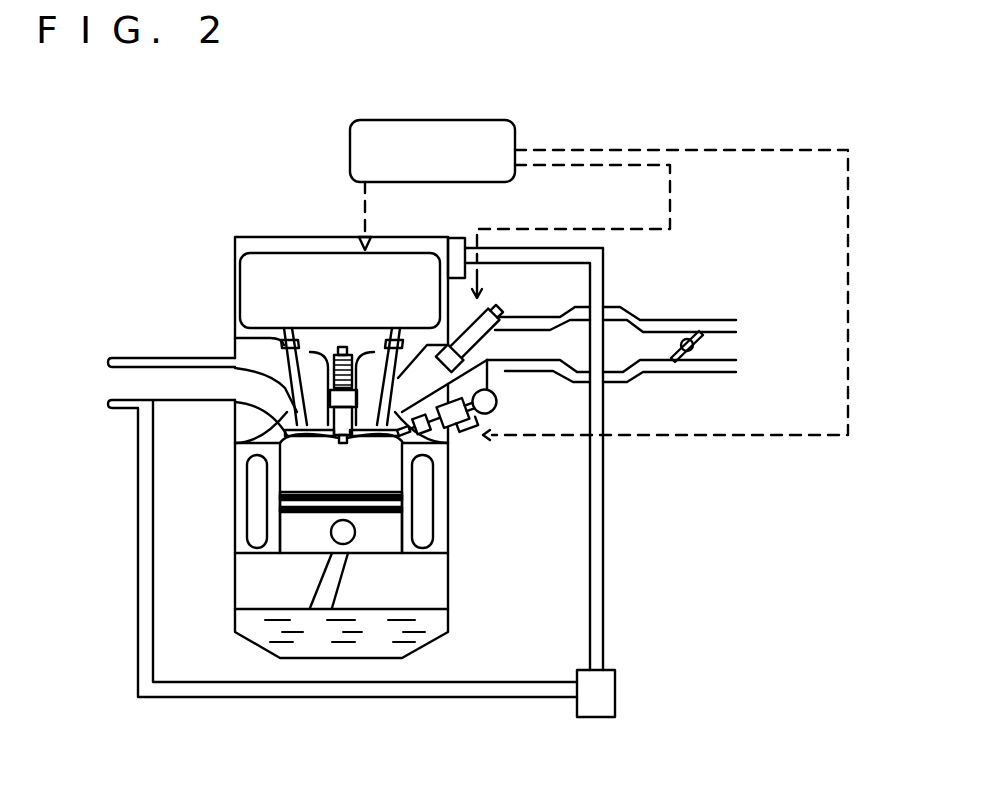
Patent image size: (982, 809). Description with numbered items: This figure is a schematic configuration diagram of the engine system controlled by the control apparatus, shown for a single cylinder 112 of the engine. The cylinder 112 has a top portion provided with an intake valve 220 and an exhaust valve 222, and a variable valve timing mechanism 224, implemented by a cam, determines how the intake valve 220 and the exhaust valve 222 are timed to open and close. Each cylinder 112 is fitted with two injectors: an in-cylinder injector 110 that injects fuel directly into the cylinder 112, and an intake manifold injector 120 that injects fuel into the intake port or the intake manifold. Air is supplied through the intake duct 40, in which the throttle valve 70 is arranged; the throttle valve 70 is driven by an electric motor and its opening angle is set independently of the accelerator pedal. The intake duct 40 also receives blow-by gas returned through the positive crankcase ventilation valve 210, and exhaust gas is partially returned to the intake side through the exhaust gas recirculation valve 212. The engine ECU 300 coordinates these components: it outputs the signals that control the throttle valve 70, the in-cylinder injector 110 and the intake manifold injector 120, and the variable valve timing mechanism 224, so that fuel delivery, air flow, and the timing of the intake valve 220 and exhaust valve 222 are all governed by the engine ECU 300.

The engine ECU 300 is at (476, 120).
The positive crankcase ventilation (PCV) valve 210 is at (457, 237).
The exhaust gas recirculation (EGR) valve 212 is at (616, 685).
The variable valve timing mechanism 224 is at (240, 268).
The intake duct 40 is at (652, 317).
The throttle valve 70 is at (697, 343).
The intake manifold injector 120 is at (490, 330).
The in-cylinder injector 110 is at (462, 438).
The intake valve 220 is at (405, 415).
The exhaust valve 222 is at (235, 440).
The cylinder 112 is at (359, 482).